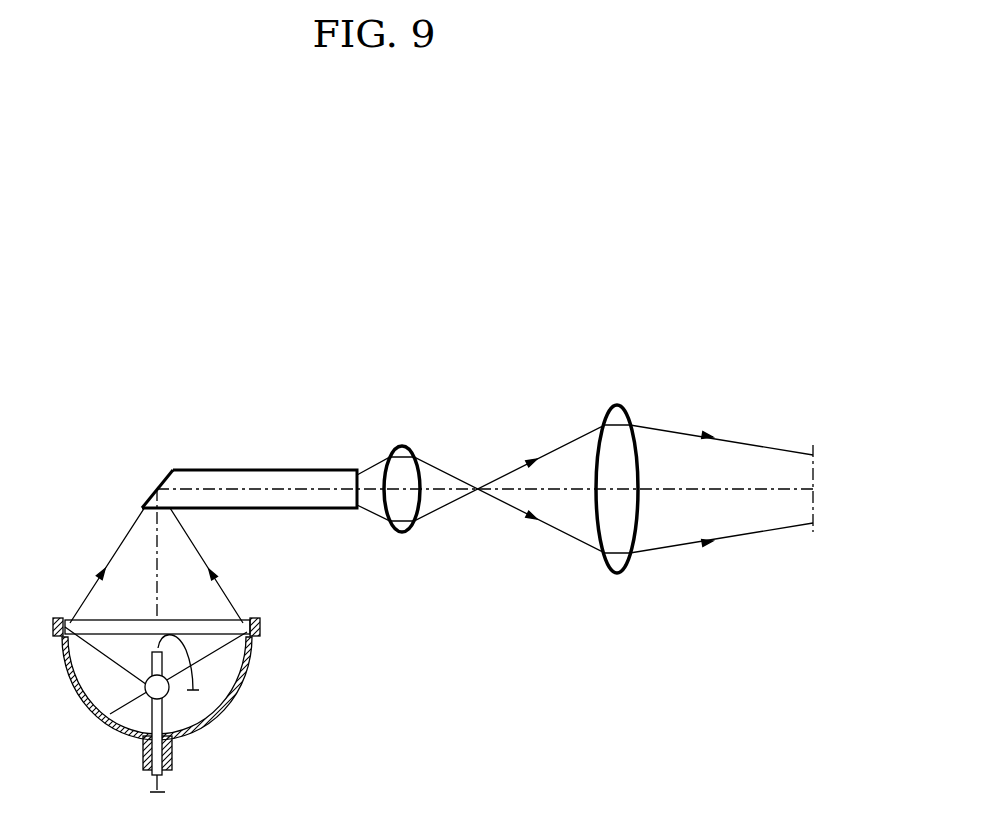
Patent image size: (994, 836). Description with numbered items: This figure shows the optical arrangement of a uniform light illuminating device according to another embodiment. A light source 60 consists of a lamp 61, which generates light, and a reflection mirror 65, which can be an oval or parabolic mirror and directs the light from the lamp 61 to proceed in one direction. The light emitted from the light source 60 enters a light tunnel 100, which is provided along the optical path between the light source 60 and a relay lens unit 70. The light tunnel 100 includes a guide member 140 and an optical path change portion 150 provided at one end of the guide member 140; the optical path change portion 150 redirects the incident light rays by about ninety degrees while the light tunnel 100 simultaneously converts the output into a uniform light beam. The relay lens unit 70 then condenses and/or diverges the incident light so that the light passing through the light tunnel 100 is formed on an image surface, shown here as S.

The light tunnel 100 is at (271, 377).
The guide member 140 is at (357, 455).
The optical path change portion 150 is at (142, 455).
The relay lens unit 70 is at (403, 400).
The light source 60 is at (272, 675).
The lamp 61 is at (146, 689).
The reflection mirror 65 is at (235, 693).
The screen S is at (813, 527).